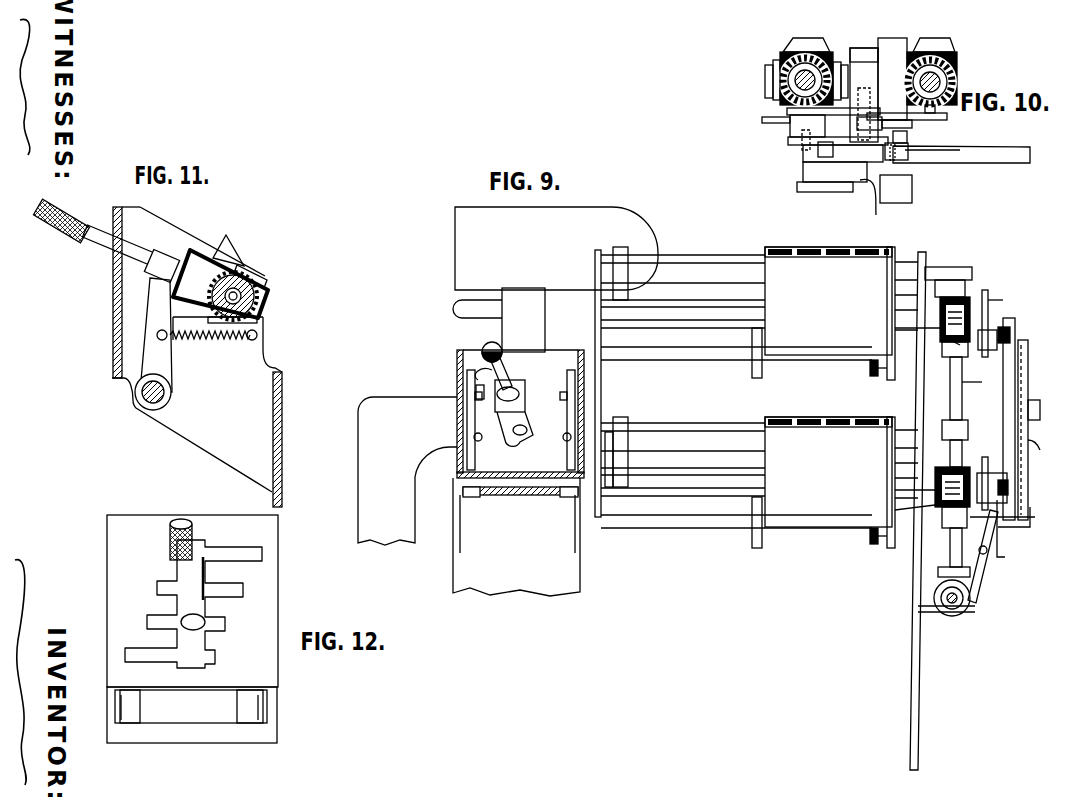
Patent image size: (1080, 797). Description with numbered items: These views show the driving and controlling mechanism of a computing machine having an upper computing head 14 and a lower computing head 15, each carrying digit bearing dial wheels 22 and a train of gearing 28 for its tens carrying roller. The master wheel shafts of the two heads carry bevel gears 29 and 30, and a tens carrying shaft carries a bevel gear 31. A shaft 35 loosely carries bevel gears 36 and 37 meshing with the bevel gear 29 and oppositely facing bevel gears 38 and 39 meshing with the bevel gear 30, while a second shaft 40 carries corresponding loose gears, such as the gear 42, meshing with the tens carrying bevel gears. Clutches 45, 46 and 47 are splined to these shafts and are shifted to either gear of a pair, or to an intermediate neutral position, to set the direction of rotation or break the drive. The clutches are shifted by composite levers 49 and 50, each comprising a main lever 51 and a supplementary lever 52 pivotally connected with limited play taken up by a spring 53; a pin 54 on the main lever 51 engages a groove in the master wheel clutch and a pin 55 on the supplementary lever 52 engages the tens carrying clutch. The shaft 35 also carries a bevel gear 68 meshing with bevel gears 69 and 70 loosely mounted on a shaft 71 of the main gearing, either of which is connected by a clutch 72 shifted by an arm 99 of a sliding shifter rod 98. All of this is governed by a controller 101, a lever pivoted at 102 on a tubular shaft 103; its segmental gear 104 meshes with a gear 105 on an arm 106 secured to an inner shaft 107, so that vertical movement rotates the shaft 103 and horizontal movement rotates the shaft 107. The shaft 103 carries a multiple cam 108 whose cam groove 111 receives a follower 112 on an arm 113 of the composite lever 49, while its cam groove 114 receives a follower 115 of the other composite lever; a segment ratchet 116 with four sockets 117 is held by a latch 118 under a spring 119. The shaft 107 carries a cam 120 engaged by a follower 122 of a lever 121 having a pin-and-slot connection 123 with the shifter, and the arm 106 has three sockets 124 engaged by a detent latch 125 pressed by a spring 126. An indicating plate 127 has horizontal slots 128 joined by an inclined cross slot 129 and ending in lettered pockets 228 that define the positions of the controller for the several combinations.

In FIG. 9, the computing head 14 is at (830, 313).
In FIG. 9, the computing head 15 is at (830, 482).
In FIG. 9, the digit bearing dial wheels 22 is at (782, 250).
In FIG. 9, the train of gearing 28 is at (872, 376).
In FIG. 10, the bevel gear 29 is at (795, 52).
In FIG. 9, the bevel gear 29 is at (940, 305).
In FIG. 9, the bevel gear 30 is at (935, 475).
In FIG. 10, the bevel gear 31 is at (945, 52).
In FIG. 10, the shaft 35 is at (812, 72).
In FIG. 9, the shaft 35 is at (950, 393).
In FIG. 9, the bevel gear 36 is at (952, 297).
In FIG. 10, the bevel gear 37 is at (790, 66).
In FIG. 9, the bevel gear 37 is at (948, 342).
In FIG. 9, the bevel gear 38 is at (946, 438).
In FIG. 9, the bevel gear 39 is at (892, 509).
In FIG. 10, the shaft 40 is at (892, 79).
In FIG. 10, the gear 42 is at (920, 90).
In FIG. 10, the clutch 45 is at (797, 85).
In FIG. 9, the clutch 45 is at (901, 329).
In FIG. 9, the clutch 46 is at (896, 487).
In FIG. 10, the clutch 47 is at (950, 75).
In FIG. 9, the composite lever 49 is at (972, 381).
In FIG. 9, the composite lever 50 is at (1030, 521).
In FIG. 10, the main lever 51 is at (864, 95).
In FIG. 10, the supplementary lever 52 is at (912, 125).
In FIG. 9, the supplementary lever 52 is at (988, 300).
In FIG. 10, the spring 53 is at (882, 123).
In FIG. 9, the spring 53 is at (986, 290).
In FIG. 10, the pin 54 is at (787, 112).
In FIG. 9, the pin 54 is at (990, 300).
In FIG. 10, the pin 55 is at (940, 116).
In FIG. 9, the bevel gear 68 is at (938, 572).
In FIG. 10, the bevel gear 69 is at (765, 88).
In FIG. 9, the bevel gear 69 is at (934, 596).
In FIG. 10, the bevel gear 70 is at (864, 59).
In FIG. 10, the shaft 71 is at (765, 75).
In FIG. 9, the clutch 72 is at (970, 598).
In FIG. 10, the rod 98 is at (770, 123).
In FIG. 9, the rod 98 is at (988, 552).
In FIG. 10, the arm 99 is at (795, 143).
In FIG. 9, the arm 99 is at (985, 565).
In FIG. 11, the controller 101 is at (45, 205).
In FIG. 12, the controller 101 is at (170, 535).
In FIG. 9, the controller 101 is at (482, 348).
In FIG. 11, the pivot 102 is at (262, 272).
In FIG. 12, the pivot 102 is at (200, 628).
In FIG. 9, the pivot 102 is at (518, 436).
In FIG. 11, the tubular shaft 103 is at (258, 292).
In FIG. 9, the tubular shaft 103 is at (683, 412).
In FIG. 11, the segmental gear 104 is at (268, 278).
In FIG. 9, the segmental gear 104 is at (510, 386).
In FIG. 11, the gear 105 is at (257, 320).
In FIG. 9, the gear 105 is at (478, 378).
In FIG. 11, the arm 106 is at (235, 252).
In FIG. 9, the arm 106 is at (476, 390).
In FIG. 11, the shaft 107 is at (258, 300).
In FIG. 10, the multiple cam 108 is at (1010, 163).
In FIG. 9, the multiple cam 108 is at (1015, 323).
In FIG. 10, the cam groove 111 is at (900, 160).
In FIG. 9, the cam groove 111 is at (990, 350).
In FIG. 10, the follower 112 is at (935, 152).
In FIG. 9, the follower 112 is at (1010, 337).
In FIG. 10, the arm 113 is at (905, 145).
In FIG. 9, the arm 113 is at (1003, 330).
In FIG. 10, the cam groove 114 is at (818, 150).
In FIG. 9, the cam groove 114 is at (1007, 483).
In FIG. 9, the follower 115 is at (1008, 492).
In FIG. 9, the segment ratchet 116 is at (575, 392).
In FIG. 9, the sockets 117 is at (575, 378).
In FIG. 12, the latch 118 is at (262, 698).
In FIG. 9, the latch 118 is at (632, 459).
In FIG. 9, the spring 119 is at (560, 449).
In FIG. 10, the cam 120 is at (896, 189).
In FIG. 9, the cam 120 is at (1028, 395).
In FIG. 10, the lever 121 is at (876, 208).
In FIG. 9, the lever 121 is at (1050, 441).
In FIG. 10, the follower 122 is at (840, 192).
In FIG. 9, the follower 122 is at (1040, 412).
In FIG. 10, the pin-and-slot connection 123 is at (807, 126).
In FIG. 9, the pin-and-slot connection 123 is at (1005, 552).
In FIG. 11, the sockets 124 is at (198, 258).
In FIG. 9, the sockets 124 is at (467, 398).
In FIG. 11, the detent latch 125 is at (172, 368).
In FIG. 12, the detent latch 125 is at (115, 694).
In FIG. 9, the detent latch 125 is at (457, 428).
In FIG. 11, the spring 126 is at (225, 341).
In FIG. 9, the spring 126 is at (487, 449).
In FIG. 12, the indicating plate 127 is at (278, 570).
In FIG. 11, the horizontal slots 128 is at (113, 272).
In FIG. 12, the horizontal slots 128 is at (203, 547).
In FIG. 12, the cross slot 129 is at (215, 565).
In FIG. 12, the pockets 228 is at (157, 590).